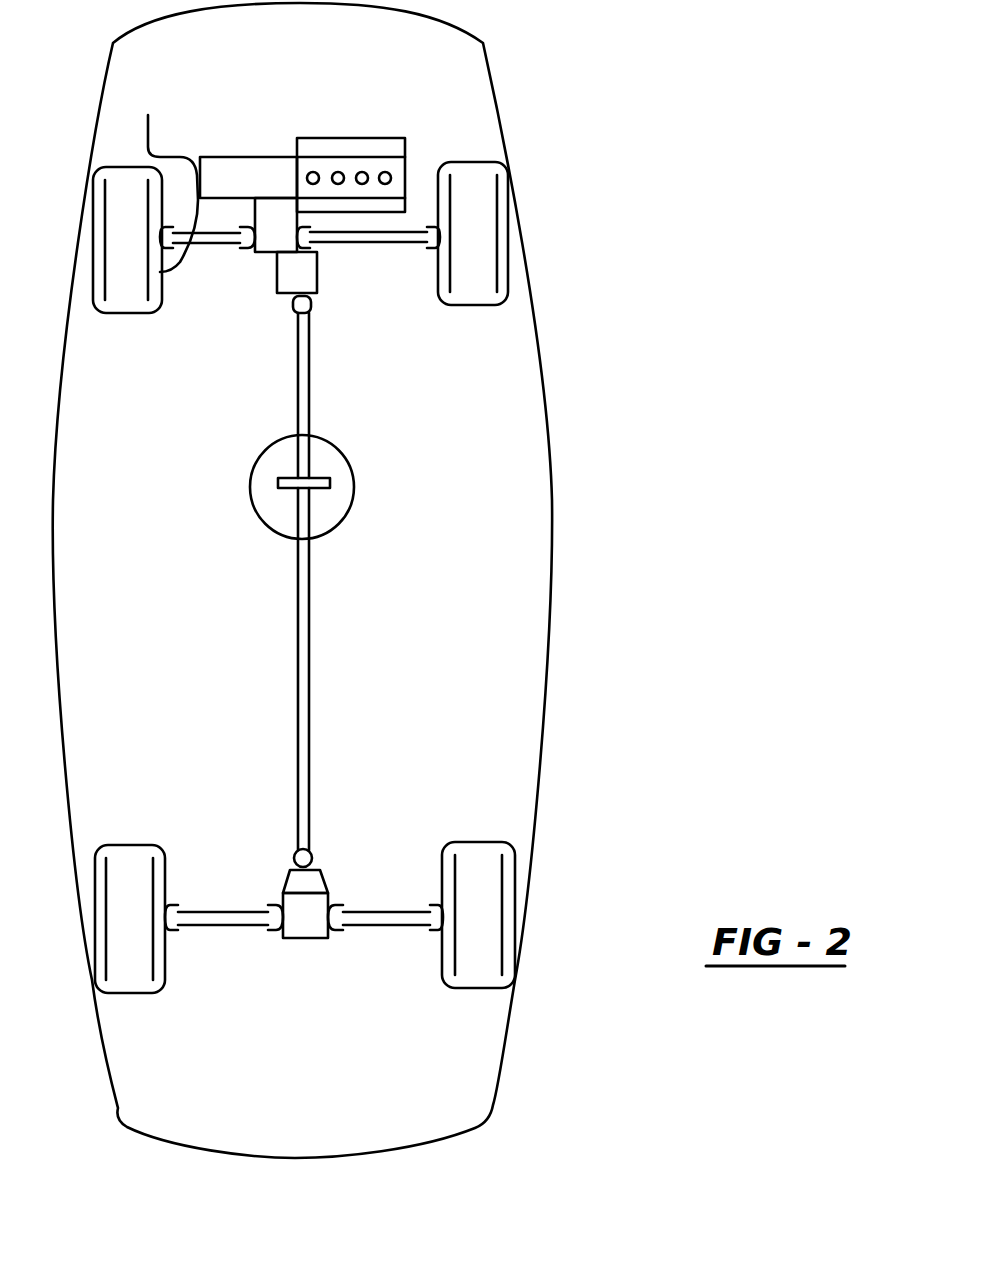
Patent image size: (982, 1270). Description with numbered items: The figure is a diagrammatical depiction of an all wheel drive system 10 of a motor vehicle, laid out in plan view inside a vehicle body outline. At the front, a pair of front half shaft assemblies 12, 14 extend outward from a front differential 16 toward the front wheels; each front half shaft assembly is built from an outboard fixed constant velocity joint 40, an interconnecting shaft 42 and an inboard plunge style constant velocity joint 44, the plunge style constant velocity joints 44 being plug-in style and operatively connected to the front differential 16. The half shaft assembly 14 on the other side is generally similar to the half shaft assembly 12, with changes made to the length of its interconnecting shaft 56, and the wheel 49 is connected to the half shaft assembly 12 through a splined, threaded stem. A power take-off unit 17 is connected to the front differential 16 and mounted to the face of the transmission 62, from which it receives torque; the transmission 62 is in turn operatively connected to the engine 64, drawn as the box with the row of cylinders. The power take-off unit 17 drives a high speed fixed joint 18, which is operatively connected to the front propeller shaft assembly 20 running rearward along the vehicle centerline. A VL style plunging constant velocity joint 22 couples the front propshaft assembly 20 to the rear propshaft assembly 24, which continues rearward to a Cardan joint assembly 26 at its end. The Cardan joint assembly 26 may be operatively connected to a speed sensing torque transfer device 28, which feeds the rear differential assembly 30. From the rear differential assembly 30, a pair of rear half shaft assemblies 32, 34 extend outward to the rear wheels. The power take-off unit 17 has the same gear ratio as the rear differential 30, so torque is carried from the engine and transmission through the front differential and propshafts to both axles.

The all wheel drive system 10 is at (311, 727).
The front half shaft assembly 12 is at (438, 252).
The front half shaft assembly 14 is at (160, 272).
The front differential 16 is at (247, 251).
The power take-off unit 17 is at (283, 284).
The high speed fixed joint 18 is at (307, 313).
The front propeller shaft assembly 20 is at (306, 413).
The VL style plunging constant velocity joint 22 is at (355, 487).
The rear propshaft assembly 24 is at (297, 595).
The Cardan joint assembly 26 is at (318, 852).
The speed sensing torque transfer device 28 is at (327, 880).
The rear differential assembly 30 is at (302, 925).
The rear half shaft assembly 32 is at (207, 920).
The rear half shaft assembly 34 is at (383, 915).
The fixed constant velocity joint 40 is at (440, 243).
The interconnecting shaft 42 is at (379, 247).
The plunge style constant velocity joint 44 is at (237, 247).
The wheel 49 is at (485, 232).
The interconnecting shaft 56 is at (164, 182).
The transmission 62 is at (237, 178).
The engine 64 is at (405, 157).